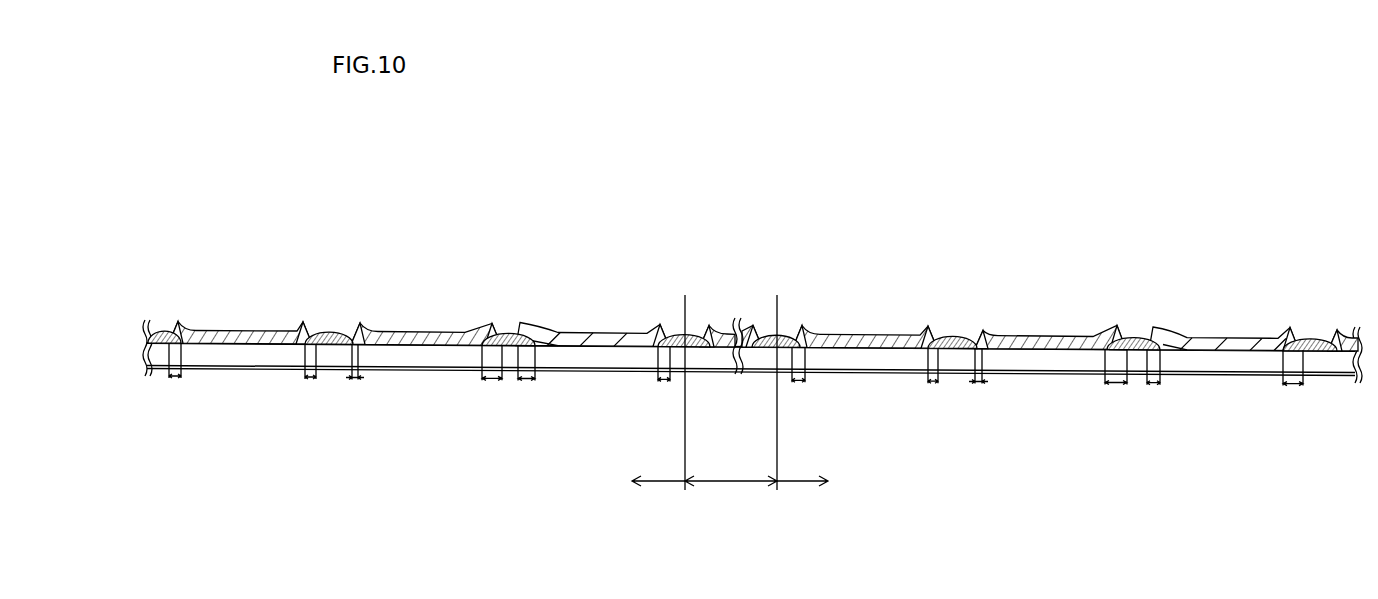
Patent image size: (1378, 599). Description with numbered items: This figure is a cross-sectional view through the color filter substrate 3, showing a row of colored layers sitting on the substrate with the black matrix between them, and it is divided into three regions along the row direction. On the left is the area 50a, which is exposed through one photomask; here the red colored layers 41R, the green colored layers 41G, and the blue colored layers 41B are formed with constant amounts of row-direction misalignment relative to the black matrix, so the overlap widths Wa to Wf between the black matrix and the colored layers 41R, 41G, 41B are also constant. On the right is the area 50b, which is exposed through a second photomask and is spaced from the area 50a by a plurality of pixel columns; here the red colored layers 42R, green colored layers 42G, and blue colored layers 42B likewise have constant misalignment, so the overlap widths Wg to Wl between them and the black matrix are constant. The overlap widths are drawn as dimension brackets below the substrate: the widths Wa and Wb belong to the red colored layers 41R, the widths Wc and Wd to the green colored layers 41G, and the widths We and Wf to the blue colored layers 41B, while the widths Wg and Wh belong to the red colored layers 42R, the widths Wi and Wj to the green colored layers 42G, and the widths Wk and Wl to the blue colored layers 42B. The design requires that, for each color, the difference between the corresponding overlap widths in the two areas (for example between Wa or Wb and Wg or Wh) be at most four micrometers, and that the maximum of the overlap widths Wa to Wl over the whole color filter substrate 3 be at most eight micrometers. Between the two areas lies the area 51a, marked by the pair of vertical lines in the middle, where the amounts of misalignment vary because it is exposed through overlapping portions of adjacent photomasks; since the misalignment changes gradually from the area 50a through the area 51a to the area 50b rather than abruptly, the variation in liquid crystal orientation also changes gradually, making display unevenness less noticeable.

The color filter substrate 3 is at (185, 295).
The colored layers (red) in area 50a 41R is at (237, 334).
The green colored layers in area 50a 41G is at (419, 331).
The blue colored layers in area 50a 41B is at (594, 334).
The colored layers (red) in area 50b 42R is at (861, 335).
The green colored layers in area 50b 42G is at (1041, 337).
The blue colored layers in area 50b 42B is at (1221, 340).
The area exposed through photomask 10a 50a is at (637, 395).
The area exposed through photomask 10b 50b is at (825, 395).
The area in which the amounts of misalignment vary 51a is at (730, 483).
The overlap width Wa is at (175, 381).
The overlap width Wb is at (310, 382).
The overlap width Wc is at (355, 382).
The overlap width Wd is at (492, 383).
The overlap width We is at (526, 384).
The overlap width Wf is at (663, 384).
The overlap width Wg is at (798, 385).
The overlap width Wh is at (933, 386).
The overlap width Wi is at (978, 386).
The overlap width Wj is at (1116, 388).
The overlap width Wk is at (1153, 388).
The overlap width Wl is at (1292, 389).